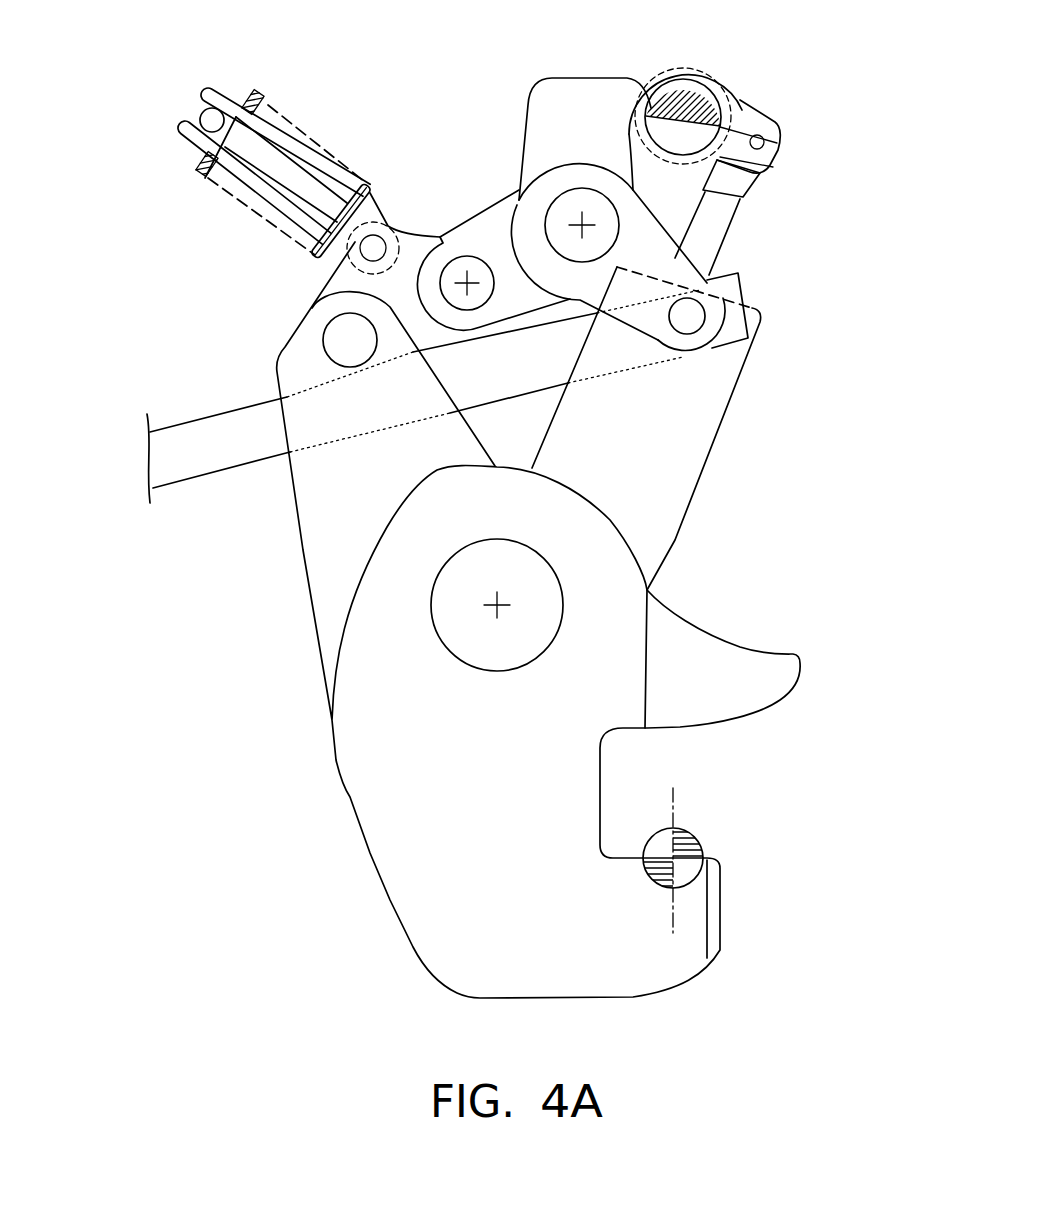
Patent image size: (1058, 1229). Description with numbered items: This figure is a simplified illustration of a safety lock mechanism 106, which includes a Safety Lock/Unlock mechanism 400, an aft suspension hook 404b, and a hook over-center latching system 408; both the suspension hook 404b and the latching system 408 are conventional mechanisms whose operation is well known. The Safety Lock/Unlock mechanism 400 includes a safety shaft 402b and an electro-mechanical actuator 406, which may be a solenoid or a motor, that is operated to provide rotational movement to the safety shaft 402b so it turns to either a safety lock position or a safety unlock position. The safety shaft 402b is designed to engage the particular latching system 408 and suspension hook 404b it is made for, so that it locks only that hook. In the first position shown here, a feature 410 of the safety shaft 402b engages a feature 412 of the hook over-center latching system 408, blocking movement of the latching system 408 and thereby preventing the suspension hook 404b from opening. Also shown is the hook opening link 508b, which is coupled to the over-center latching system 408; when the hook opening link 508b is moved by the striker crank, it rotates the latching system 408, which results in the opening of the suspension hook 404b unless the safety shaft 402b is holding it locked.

The safety lock mechanism 106 is at (188, 292).
The Safety Lock/Unlock mechanism 400 is at (820, 162).
The safety shaft 402b is at (742, 99).
The suspension hook 404b is at (507, 824).
The electro-mechanical actuator 406 is at (702, 463).
The hook over-center latching system 408 is at (468, 222).
The feature of safety shaft 410 is at (682, 117).
The feature of hook over-center latching system 412 is at (638, 100).
The hook opening link 508b is at (229, 471).